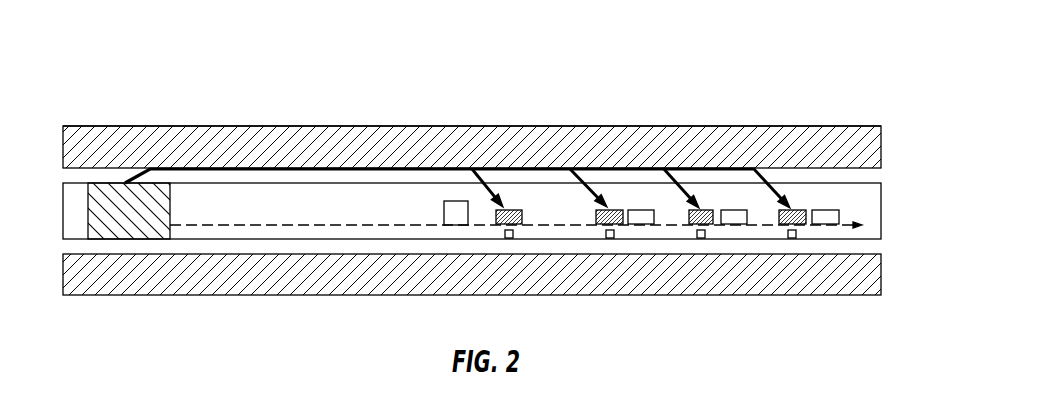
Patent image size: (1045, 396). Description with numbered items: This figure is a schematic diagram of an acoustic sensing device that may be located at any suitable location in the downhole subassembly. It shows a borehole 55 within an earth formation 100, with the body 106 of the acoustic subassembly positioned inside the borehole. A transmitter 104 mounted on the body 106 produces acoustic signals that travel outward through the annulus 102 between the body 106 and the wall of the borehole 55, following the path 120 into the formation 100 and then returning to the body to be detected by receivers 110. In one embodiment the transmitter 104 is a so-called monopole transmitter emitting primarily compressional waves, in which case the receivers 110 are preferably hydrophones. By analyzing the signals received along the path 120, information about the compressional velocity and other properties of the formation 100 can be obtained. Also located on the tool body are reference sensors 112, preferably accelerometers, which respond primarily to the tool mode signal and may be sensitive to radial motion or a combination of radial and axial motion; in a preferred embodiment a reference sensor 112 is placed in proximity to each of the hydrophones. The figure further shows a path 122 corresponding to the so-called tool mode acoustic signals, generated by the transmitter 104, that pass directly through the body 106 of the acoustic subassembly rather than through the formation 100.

The earth formation 100 is at (157, 50).
The annulus 102 is at (872, 173).
The transmitter 104 is at (120, 232).
The body of the acoustic subassembly 106 is at (203, 183).
The receivers 110 is at (522, 225).
The reference sensor 112 is at (460, 212).
The path 120 is at (384, 160).
The path 122 is at (333, 217).
The borehole 55 is at (853, 125).